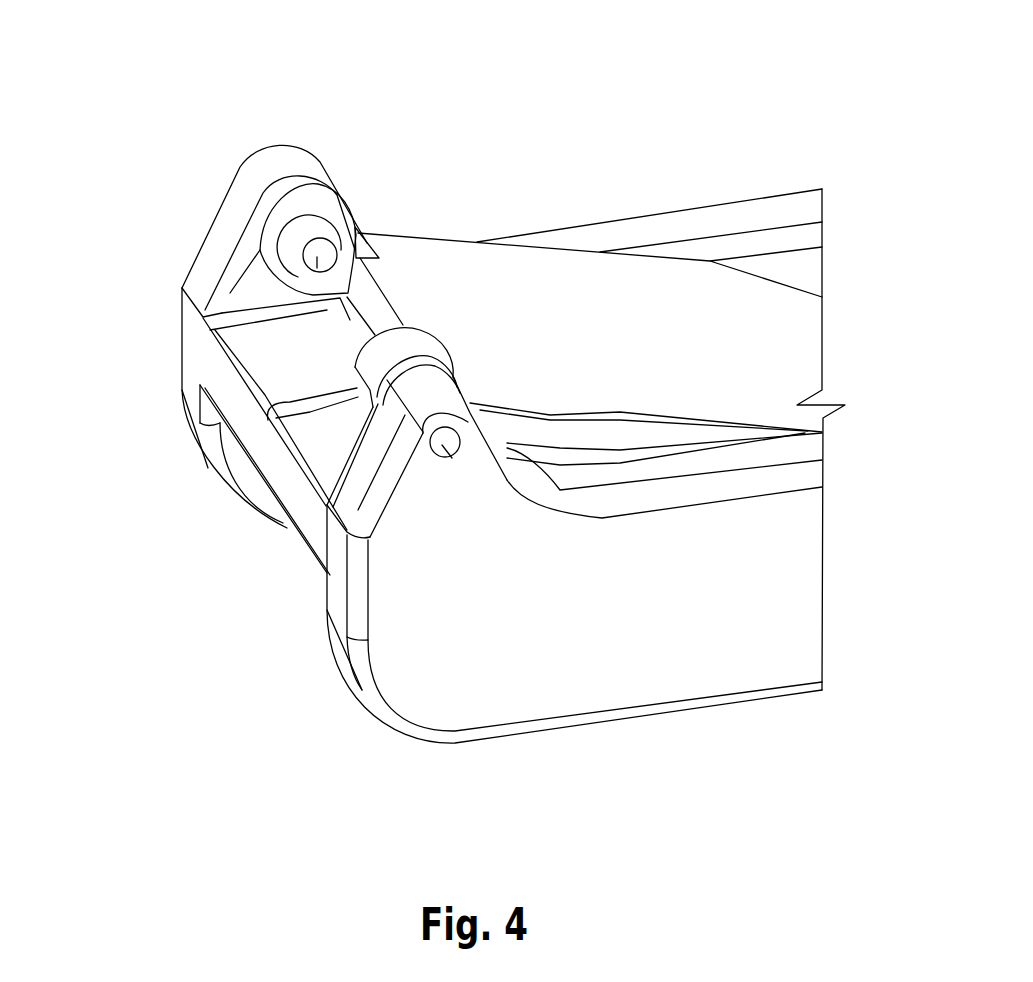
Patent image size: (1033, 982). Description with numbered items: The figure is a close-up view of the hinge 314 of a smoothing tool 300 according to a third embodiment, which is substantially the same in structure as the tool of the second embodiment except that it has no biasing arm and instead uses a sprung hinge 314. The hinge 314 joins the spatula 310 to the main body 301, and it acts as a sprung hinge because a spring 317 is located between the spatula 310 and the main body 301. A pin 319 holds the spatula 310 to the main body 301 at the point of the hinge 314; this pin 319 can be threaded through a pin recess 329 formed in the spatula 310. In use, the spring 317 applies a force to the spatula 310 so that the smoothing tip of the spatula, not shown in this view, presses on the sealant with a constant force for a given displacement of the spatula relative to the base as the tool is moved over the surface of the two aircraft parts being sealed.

The smoothing tool 300 is at (227, 152).
The main body 301 is at (613, 710).
The spatula 310 is at (630, 296).
The hinge 314 is at (323, 443).
The spring 317 is at (371, 379).
The pin 319 is at (452, 458).
The pin recess 329 is at (292, 278).